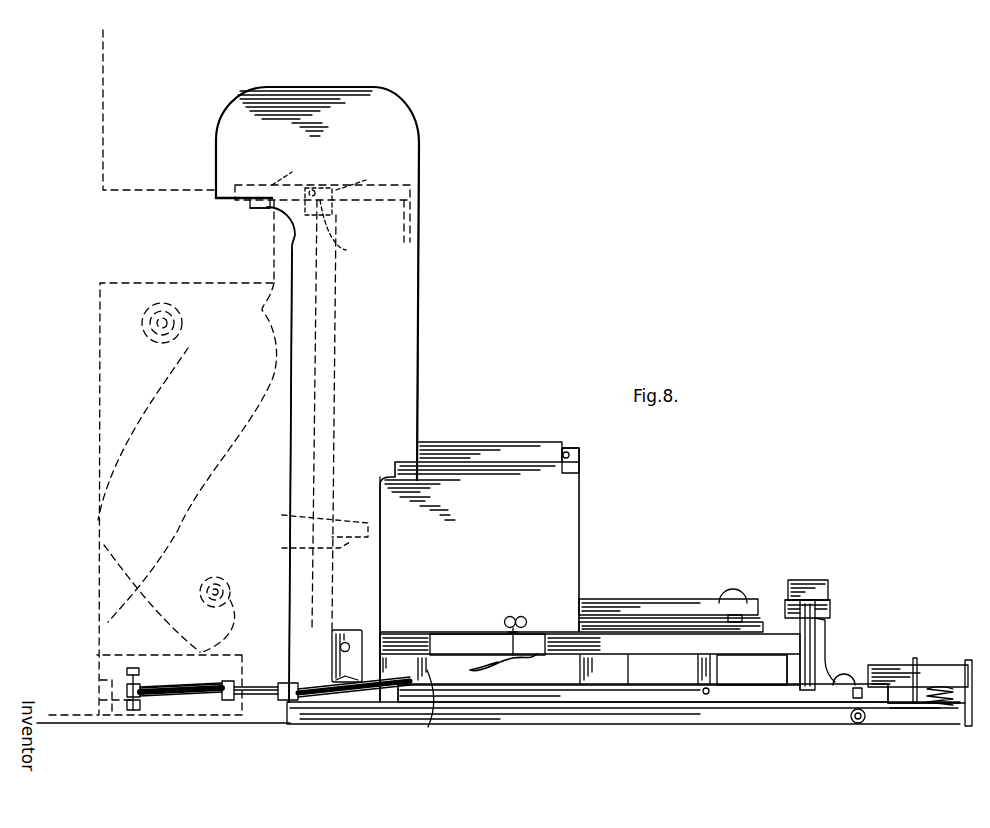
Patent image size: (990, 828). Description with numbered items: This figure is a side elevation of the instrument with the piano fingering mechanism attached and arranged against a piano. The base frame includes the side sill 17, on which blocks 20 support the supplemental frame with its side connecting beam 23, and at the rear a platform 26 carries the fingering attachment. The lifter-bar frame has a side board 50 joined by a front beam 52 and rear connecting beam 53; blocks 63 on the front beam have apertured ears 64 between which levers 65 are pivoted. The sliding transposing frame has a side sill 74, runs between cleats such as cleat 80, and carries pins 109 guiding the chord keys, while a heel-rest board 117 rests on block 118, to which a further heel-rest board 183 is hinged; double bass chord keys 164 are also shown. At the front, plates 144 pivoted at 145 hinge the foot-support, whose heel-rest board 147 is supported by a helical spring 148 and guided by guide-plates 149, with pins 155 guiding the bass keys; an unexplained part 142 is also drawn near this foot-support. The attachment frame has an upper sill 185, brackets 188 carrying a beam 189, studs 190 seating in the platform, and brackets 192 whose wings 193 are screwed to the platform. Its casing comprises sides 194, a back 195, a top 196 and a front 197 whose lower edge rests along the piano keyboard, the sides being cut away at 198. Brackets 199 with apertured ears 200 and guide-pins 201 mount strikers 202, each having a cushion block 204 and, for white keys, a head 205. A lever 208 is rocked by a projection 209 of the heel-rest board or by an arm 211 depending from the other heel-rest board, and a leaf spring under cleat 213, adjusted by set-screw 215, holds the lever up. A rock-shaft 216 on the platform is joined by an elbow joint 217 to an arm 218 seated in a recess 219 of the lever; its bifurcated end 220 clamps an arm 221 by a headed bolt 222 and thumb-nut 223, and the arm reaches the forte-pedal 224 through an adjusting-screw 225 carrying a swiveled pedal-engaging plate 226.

The side sill 17 is at (549, 712).
The block 20 is at (437, 692).
The side connecting beam 23 is at (600, 640).
The platform 26 is at (312, 700).
The side board 50 is at (572, 526).
The front beam 52 is at (581, 468).
The rear connecting beam 53 is at (470, 493).
The block 63 is at (580, 450).
The apertured ear 64 is at (566, 451).
The lever 65 is at (494, 442).
The side sill 74 is at (662, 624).
The cleat 80 is at (703, 628).
The pin 109 is at (752, 670).
The heel-rest board 117 is at (822, 585).
The block 118 is at (827, 629).
The cam 142 is at (838, 672).
The plate 144 is at (932, 703).
The pivotal connection 145 is at (850, 705).
The heel-rest board 147 is at (940, 673).
The helical spring 148 is at (957, 712).
The guide-plate 149 is at (916, 658).
The pin 155 is at (866, 720).
The double bass chord key 164 is at (592, 599).
The heel-rest board 183 is at (829, 608).
The upper sill 185 is at (350, 230).
The bracket 188 is at (296, 548).
The beam 189 is at (305, 521).
The stud 190 is at (381, 706).
The bracket 192 is at (332, 637).
The wing 193 is at (332, 663).
The side 194 is at (338, 476).
The back 195 is at (418, 318).
The top 196 is at (336, 87).
The front 197 is at (216, 152).
The cut-away 198 is at (282, 228).
The bracket 199 is at (262, 209).
The apertured ear 200 is at (325, 187).
The guide-pin 201 is at (367, 177).
The striker 202 is at (298, 167).
The cushion block 204 is at (250, 199).
The head 205 is at (257, 198).
The lever 208 is at (675, 690).
The projection 209 is at (889, 672).
The arm 211 is at (831, 617).
The cleat 213 is at (590, 645).
The set-screw 215 is at (518, 617).
The rock-shaft 216 is at (232, 701).
The elbow joint 217 is at (285, 701).
The arm 218 is at (300, 701).
The recess 219 is at (402, 720).
The bifurcation 220 is at (222, 689).
The arm 221 is at (188, 697).
The headed bolt 222 is at (225, 701).
The thumb-nut 223 is at (226, 681).
The forte-pedal 224 is at (112, 696).
The adjusting-screw 225 is at (127, 672).
The pedal-engaging plate 226 is at (133, 710).